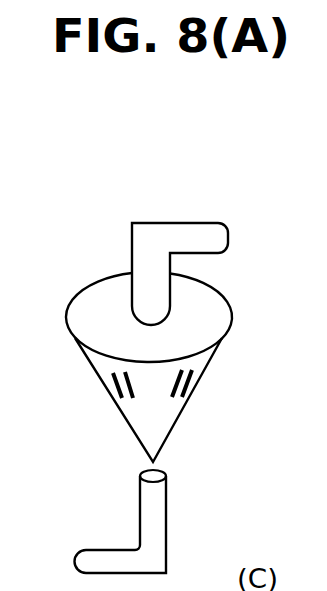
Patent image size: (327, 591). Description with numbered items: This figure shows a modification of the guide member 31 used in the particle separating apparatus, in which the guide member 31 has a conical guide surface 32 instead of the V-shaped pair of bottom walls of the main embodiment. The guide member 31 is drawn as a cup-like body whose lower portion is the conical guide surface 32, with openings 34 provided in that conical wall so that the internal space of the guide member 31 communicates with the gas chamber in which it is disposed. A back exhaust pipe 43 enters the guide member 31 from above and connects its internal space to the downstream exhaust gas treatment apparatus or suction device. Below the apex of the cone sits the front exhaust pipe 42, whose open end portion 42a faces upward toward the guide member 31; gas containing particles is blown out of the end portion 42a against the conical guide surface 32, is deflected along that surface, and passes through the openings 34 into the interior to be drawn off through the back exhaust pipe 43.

The guide member 31 is at (70, 302).
The conical guide surface 32 is at (126, 419).
The openings 34 is at (110, 383).
The back exhaust pipe 43 is at (193, 231).
The front exhaust pipe 42 is at (155, 558).
The end portion of the front exhaust pipe 42a is at (164, 471).